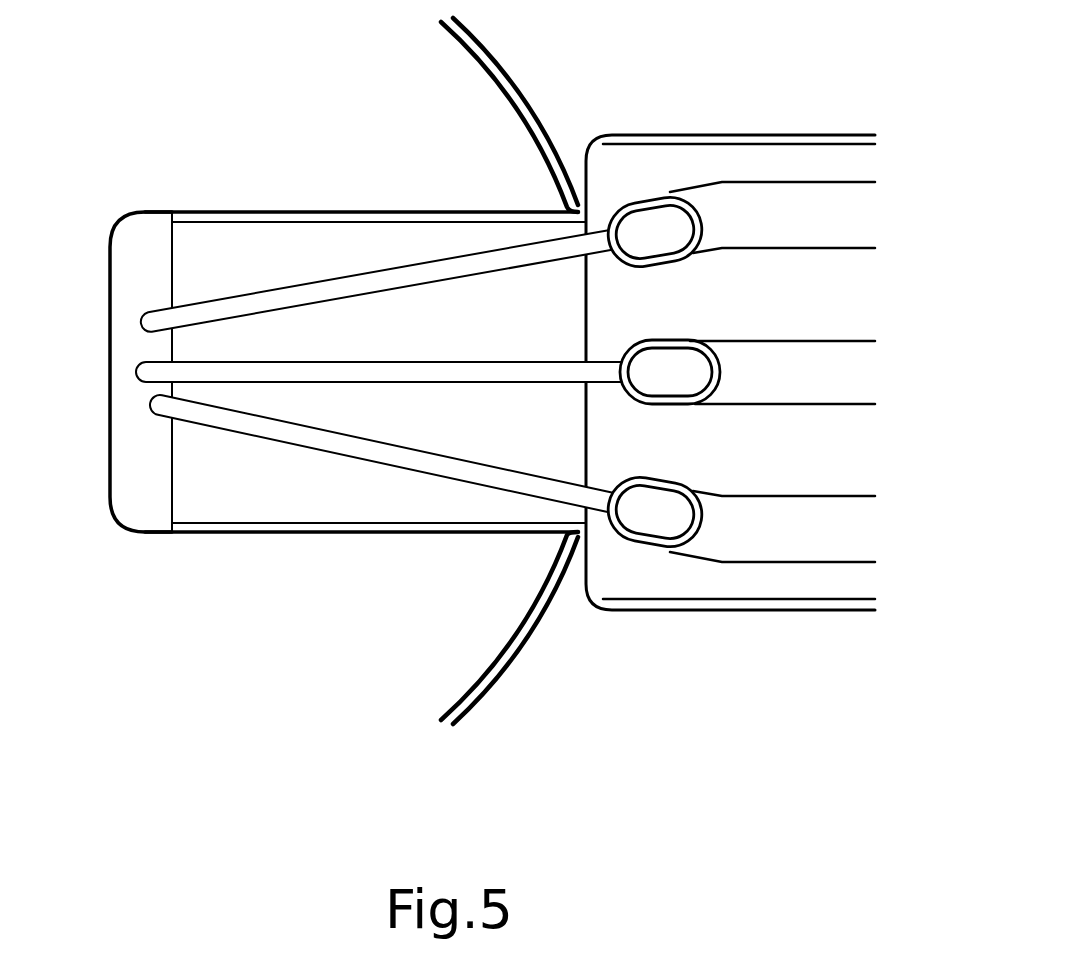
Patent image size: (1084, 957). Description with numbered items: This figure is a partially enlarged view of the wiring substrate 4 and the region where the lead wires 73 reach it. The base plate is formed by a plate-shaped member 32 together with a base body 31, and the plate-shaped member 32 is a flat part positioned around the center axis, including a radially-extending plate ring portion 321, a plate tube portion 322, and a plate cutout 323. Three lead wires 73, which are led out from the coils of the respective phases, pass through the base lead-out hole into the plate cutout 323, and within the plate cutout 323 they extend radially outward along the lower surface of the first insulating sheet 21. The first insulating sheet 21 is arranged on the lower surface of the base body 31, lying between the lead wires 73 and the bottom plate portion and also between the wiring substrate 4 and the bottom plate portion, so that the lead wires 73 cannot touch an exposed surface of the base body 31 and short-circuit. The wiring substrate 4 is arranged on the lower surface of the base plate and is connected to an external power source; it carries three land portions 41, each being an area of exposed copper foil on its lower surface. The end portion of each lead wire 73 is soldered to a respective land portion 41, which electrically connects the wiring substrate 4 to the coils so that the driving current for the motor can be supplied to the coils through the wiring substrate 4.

The wiring substrate 4 is at (697, 578).
The first insulating sheet 21 is at (368, 248).
The base body 31 is at (753, 75).
The plate-shaped member 32 is at (495, 733).
The land portion 41 is at (688, 196).
The lead wire 73 is at (250, 300).
The plate ring portion 321 is at (500, 610).
The plate tube portion 322 is at (510, 72).
The plate cutout 323 is at (133, 278).